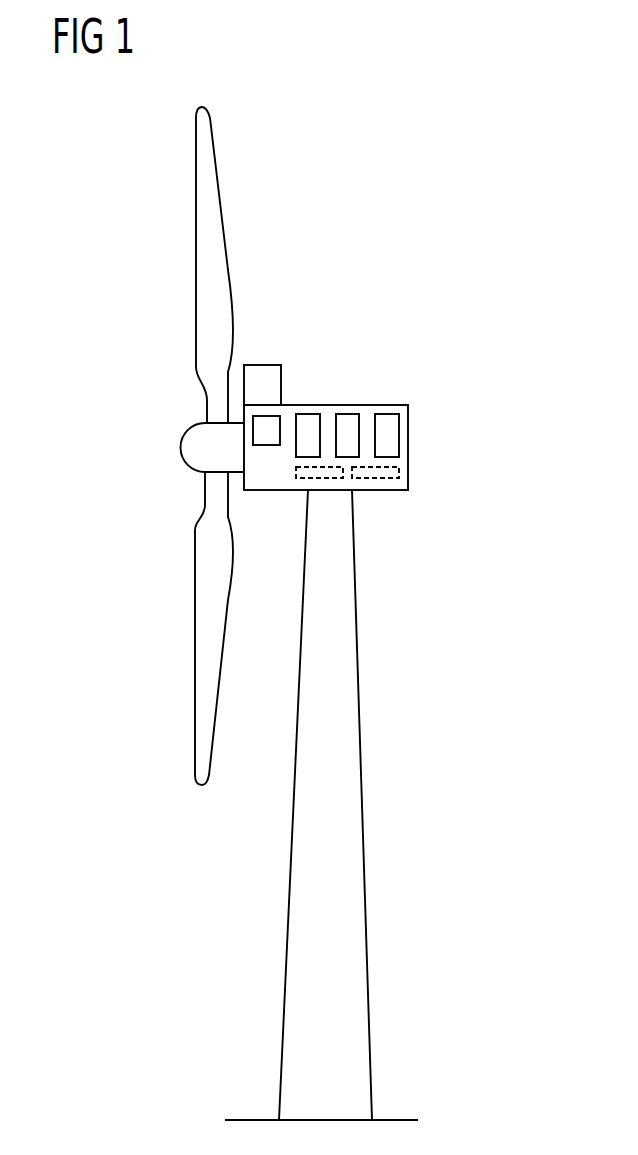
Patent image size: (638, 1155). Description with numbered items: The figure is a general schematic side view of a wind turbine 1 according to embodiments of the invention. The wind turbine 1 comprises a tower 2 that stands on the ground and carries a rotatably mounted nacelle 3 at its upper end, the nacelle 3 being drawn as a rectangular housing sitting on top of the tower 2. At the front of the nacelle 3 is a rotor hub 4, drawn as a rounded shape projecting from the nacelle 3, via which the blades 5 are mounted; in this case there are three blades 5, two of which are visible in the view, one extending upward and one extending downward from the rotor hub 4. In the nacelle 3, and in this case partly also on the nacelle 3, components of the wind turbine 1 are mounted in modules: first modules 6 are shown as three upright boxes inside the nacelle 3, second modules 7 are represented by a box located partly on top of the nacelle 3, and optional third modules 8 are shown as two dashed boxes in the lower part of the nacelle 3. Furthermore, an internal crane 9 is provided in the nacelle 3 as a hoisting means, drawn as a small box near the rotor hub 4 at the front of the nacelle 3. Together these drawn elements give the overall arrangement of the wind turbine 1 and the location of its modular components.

The wind turbine 1 is at (416, 270).
The tower 2 is at (356, 806).
The nacelle 3 is at (408, 438).
The rotor hub 4 is at (182, 448).
The blades 5 is at (203, 250).
The first modules 6 is at (305, 412).
The second modules 7 is at (262, 364).
The third modules 8 is at (302, 478).
The internal crane 9 is at (268, 438).